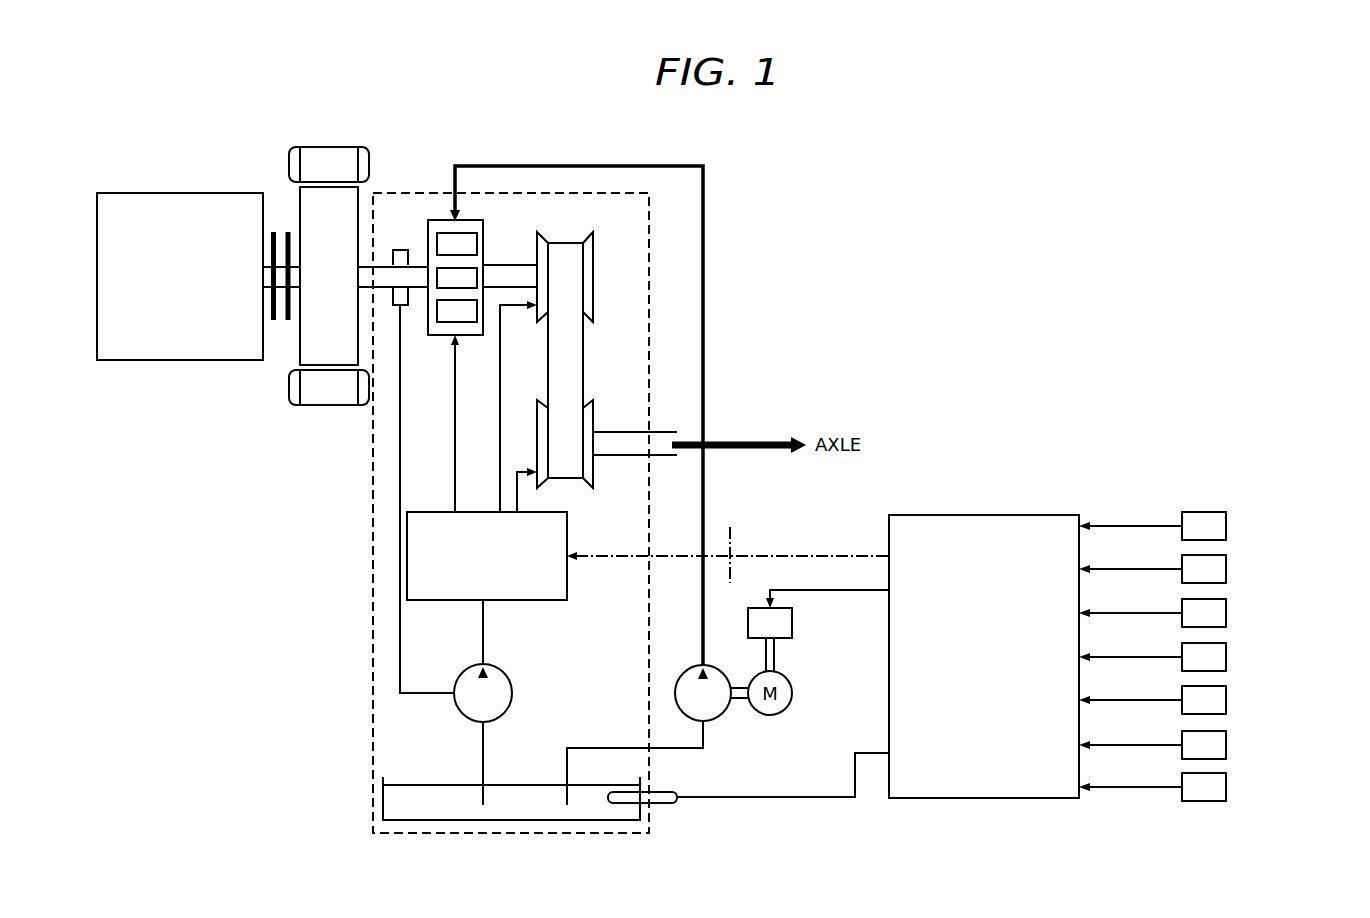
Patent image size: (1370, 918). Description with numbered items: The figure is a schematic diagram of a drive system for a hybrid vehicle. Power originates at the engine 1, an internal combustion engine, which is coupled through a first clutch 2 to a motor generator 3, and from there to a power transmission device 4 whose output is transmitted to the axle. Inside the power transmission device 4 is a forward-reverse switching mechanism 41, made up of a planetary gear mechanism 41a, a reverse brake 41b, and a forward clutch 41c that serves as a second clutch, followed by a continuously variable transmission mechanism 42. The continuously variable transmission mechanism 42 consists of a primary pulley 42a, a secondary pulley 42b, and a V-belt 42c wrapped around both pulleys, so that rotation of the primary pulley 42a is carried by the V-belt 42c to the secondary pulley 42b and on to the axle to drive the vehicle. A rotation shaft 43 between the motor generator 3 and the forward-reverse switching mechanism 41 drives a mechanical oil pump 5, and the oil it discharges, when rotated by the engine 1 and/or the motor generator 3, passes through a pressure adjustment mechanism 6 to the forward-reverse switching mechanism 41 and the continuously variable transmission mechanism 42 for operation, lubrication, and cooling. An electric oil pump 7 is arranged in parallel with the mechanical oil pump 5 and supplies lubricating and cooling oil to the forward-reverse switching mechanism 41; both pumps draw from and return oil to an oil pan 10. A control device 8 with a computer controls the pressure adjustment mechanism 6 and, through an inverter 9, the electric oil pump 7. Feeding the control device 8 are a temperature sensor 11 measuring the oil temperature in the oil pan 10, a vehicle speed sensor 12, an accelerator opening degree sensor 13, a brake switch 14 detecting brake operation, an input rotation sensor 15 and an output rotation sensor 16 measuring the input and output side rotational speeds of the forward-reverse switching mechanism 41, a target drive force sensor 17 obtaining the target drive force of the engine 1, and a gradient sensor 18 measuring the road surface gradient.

The engine 1 is at (150, 192).
The first clutch 2 is at (284, 230).
The motor generator 3 is at (330, 147).
The power transmission device 4 is at (395, 193).
The mechanical oil pump 5 is at (465, 722).
The pressure adjustment mechanism 6 is at (455, 600).
The electric oil pump 7 is at (677, 690).
The control device 8 is at (1000, 514).
The inverter 9 is at (792, 620).
The oil pan 10 is at (383, 792).
The temperature sensor 11 is at (672, 805).
The vehicle speed sensor 12 is at (1226, 524).
The accelerator opening degree sensor 13 is at (1226, 567).
The brake switch 14 is at (1226, 611).
The input rotation sensor 15 is at (1226, 655).
The output rotation sensor 16 is at (1226, 698).
The target drive force sensor 17 is at (1226, 743).
The gradient sensor 18 is at (1226, 785).
The forward-reverse switching mechanism 41 is at (442, 287).
The planetary gear mechanism 41a is at (472, 272).
The reverse brake 41b is at (478, 240).
The forward clutch 41c is at (440, 336).
The continuously variable transmission mechanism 42 is at (589, 314).
The primary pulley 42a is at (593, 272).
The secondary pulley 42b is at (593, 470).
The V-belt 42c is at (583, 355).
The rotation shaft 43 is at (418, 267).